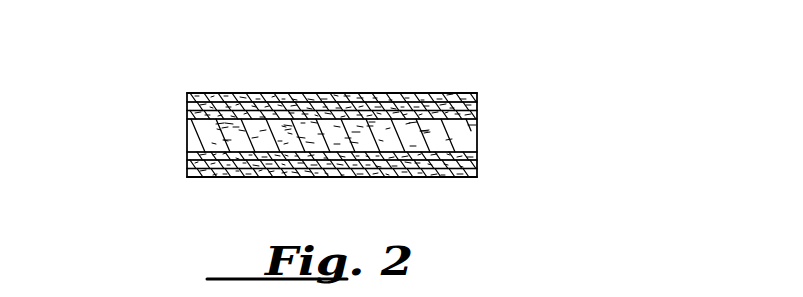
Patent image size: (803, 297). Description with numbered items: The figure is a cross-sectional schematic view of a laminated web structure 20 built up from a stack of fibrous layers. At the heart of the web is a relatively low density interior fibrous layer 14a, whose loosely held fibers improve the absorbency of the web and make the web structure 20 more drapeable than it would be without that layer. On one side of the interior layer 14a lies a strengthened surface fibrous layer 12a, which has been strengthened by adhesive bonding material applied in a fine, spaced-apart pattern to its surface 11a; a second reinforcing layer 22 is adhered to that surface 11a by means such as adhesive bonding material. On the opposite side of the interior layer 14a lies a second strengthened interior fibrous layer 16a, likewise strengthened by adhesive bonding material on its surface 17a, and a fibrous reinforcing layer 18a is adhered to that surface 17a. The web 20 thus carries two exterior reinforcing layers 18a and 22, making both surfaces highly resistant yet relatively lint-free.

The web structure 20 is at (153, 137).
The second reinforcing layer 22 is at (452, 99).
The surface of strengthened layer 11a is at (188, 102).
The strengthened surface fibrous layer 12a is at (474, 119).
The interior fibrous layer 14a is at (460, 140).
The strengthened interior fibrous layer 16a is at (472, 163).
The surface of strengthened layer 17a is at (188, 166).
The fibrous reinforcing layer 18a is at (473, 177).